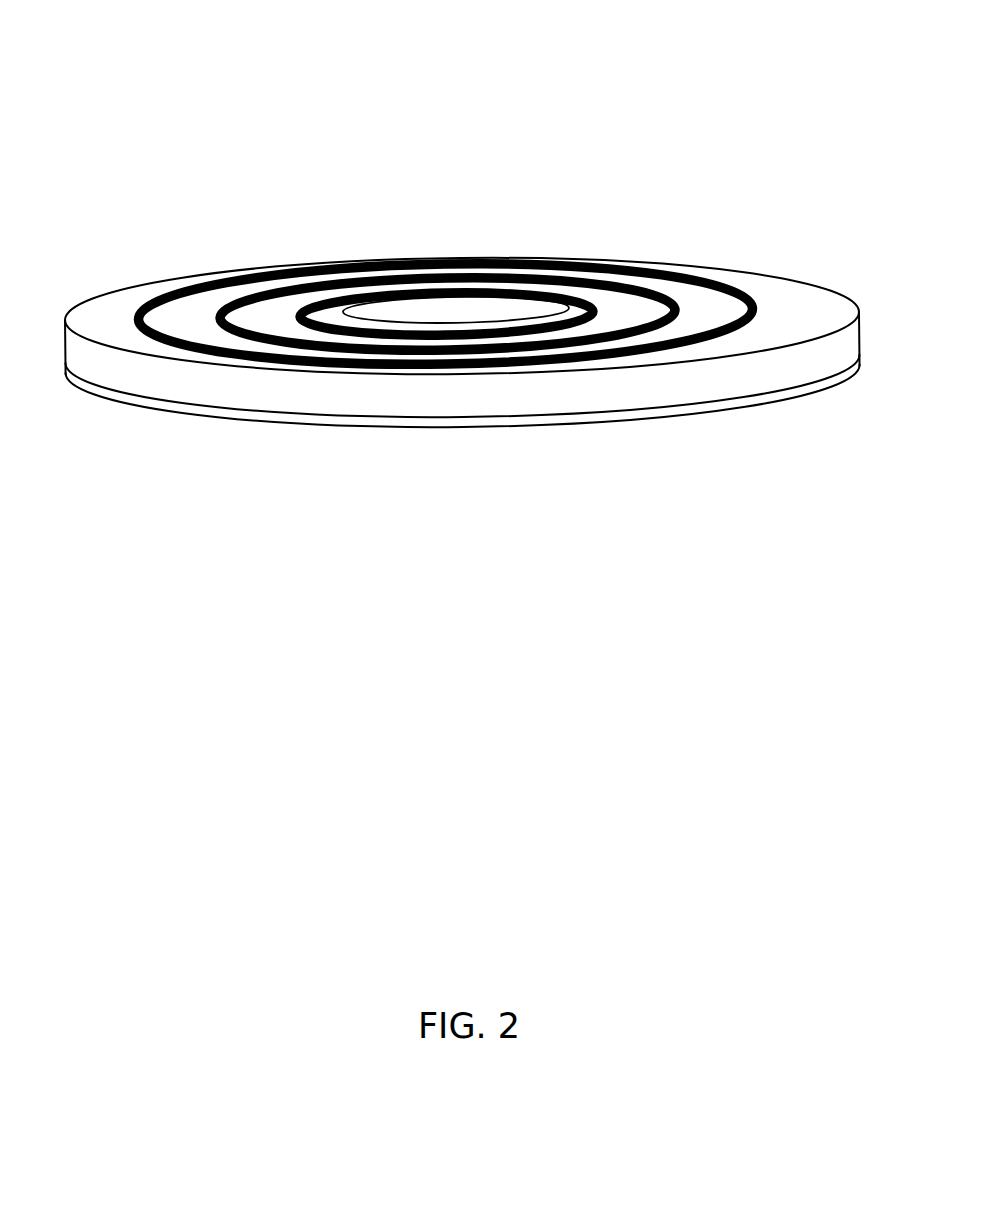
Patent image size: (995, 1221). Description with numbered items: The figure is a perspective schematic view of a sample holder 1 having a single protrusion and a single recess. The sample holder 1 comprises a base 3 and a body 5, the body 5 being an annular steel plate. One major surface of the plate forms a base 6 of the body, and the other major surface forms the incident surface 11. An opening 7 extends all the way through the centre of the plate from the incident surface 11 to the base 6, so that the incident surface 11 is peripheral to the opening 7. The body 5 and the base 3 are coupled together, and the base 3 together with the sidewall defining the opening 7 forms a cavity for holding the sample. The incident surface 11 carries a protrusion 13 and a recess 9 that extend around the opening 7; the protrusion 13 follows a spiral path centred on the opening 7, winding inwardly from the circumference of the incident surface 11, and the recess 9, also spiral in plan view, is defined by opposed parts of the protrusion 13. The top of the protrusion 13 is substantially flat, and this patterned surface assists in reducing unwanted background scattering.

The sample holder 1 is at (290, 127).
The base 3 is at (800, 399).
The body 5 is at (64, 348).
The base of the body 6 is at (403, 412).
The opening 7 is at (462, 313).
The recess 9 is at (215, 284).
The incident surface 11 is at (680, 270).
The protrusion 13 is at (220, 268).